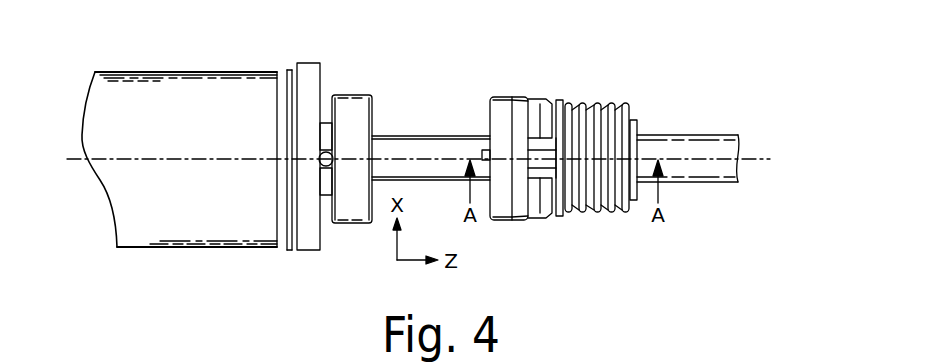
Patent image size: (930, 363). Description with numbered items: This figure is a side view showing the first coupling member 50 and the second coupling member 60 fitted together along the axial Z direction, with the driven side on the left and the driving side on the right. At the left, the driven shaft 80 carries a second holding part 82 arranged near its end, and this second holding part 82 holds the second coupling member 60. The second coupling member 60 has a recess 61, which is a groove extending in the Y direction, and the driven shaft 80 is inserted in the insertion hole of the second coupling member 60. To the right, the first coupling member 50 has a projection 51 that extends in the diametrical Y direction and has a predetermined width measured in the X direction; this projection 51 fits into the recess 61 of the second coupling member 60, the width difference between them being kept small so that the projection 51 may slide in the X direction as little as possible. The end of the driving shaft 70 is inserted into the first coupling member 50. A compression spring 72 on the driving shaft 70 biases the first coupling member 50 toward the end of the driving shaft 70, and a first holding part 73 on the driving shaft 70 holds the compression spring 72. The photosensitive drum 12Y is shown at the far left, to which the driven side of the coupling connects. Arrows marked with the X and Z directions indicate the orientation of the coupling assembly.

The photosensitive drum (yellow) 12Y is at (208, 85).
The driven shaft 80 is at (405, 143).
The second holding part 82 is at (483, 150).
The second coupling member 60 is at (503, 105).
The recess 61 is at (541, 215).
The projection 51 is at (545, 112).
The first coupling member 50 is at (563, 216).
The compression spring 72 is at (608, 110).
The first holding part 73 is at (637, 128).
The driving shaft 70 is at (714, 172).